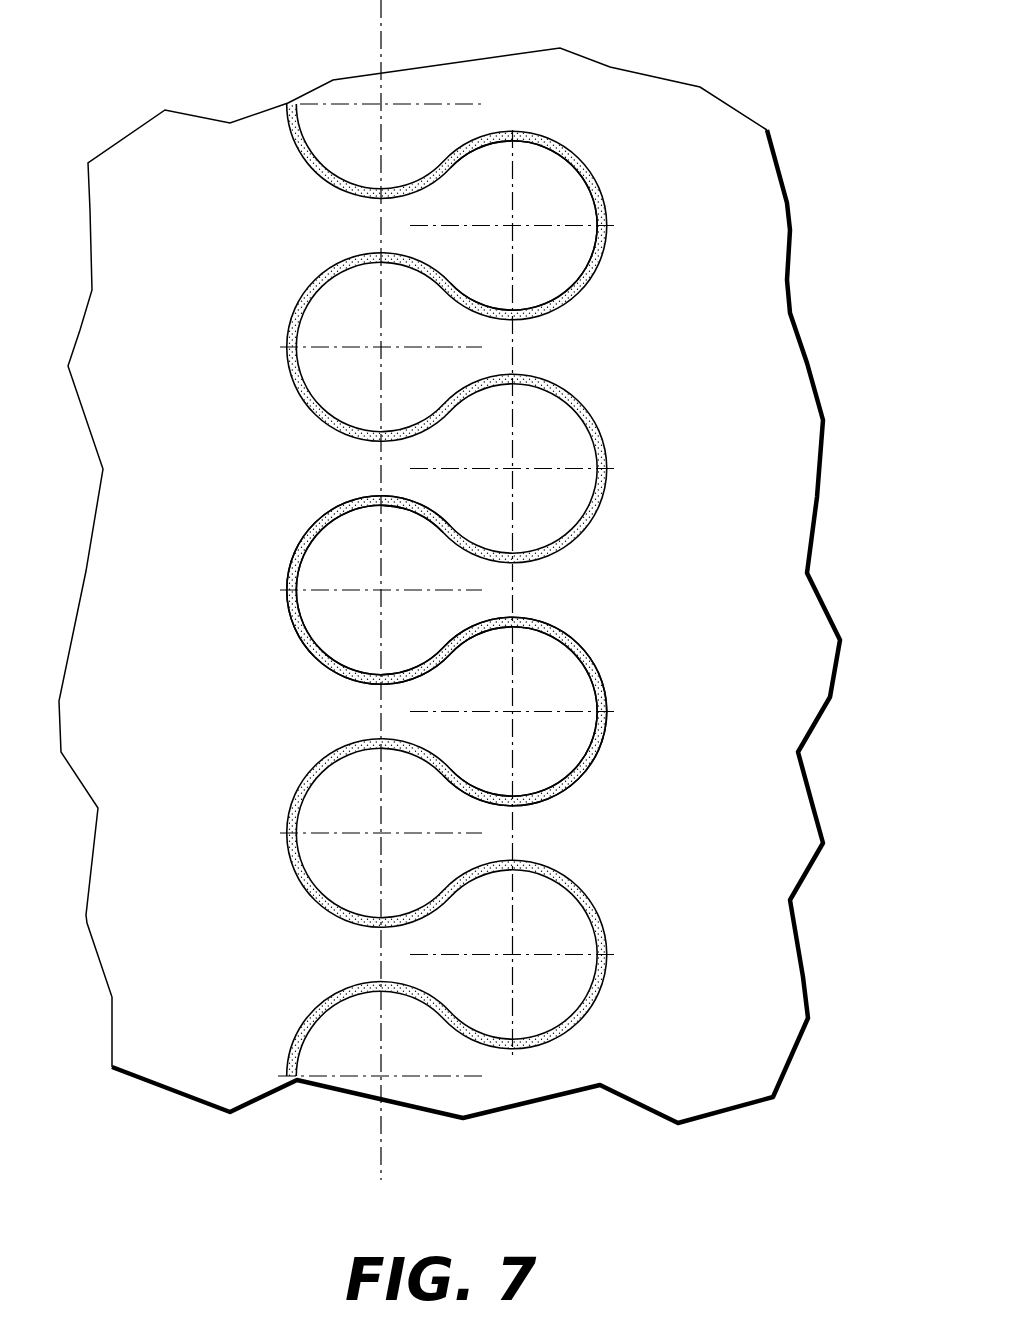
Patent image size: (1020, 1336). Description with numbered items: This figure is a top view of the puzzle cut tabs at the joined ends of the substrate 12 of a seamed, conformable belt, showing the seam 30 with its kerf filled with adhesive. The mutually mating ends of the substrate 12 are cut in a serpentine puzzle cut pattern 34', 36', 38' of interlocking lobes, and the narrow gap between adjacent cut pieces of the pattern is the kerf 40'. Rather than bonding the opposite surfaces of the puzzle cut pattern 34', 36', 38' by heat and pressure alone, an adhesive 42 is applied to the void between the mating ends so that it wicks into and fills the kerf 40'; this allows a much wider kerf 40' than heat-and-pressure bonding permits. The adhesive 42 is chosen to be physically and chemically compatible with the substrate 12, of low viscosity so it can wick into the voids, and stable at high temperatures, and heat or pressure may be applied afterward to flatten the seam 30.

The substrate 12 is at (787, 377).
The seam 30 is at (606, 424).
The puzzle cut pattern element 34' is at (523, 244).
The puzzle cut pattern element 36' is at (377, 589).
The puzzle cut pattern element 38' is at (352, 567).
The kerf 40' is at (559, 703).
The adhesive 42 is at (570, 783).